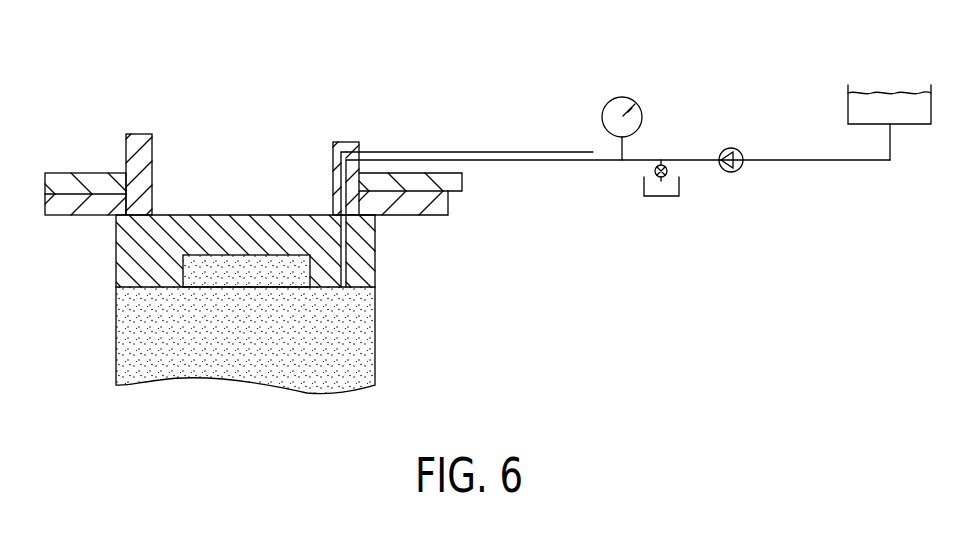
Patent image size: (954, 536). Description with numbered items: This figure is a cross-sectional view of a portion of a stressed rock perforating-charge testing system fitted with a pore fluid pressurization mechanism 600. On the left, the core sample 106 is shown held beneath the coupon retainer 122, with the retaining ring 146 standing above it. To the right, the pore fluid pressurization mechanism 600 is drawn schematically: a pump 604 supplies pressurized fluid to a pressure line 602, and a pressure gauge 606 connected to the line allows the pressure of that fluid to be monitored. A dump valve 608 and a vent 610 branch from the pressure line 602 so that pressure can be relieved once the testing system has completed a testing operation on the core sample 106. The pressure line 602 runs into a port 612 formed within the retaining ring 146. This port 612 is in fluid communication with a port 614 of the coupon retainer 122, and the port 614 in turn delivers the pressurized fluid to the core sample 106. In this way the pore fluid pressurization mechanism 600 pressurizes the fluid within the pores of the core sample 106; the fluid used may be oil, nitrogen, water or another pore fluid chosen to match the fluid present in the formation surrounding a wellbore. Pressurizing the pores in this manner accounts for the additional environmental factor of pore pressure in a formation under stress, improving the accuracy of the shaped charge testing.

The retaining ring 146 is at (348, 143).
The coupon retainer 122 is at (368, 270).
The port 614 is at (349, 232).
The port 612 is at (337, 170).
The pressure line 602 is at (426, 150).
The pore fluid pressurization mechanism 600 is at (533, 95).
The pressure gauge 606 is at (644, 116).
The dump valve 608 is at (652, 172).
The vent 610 is at (681, 191).
The pump 604 is at (737, 148).
The core sample 106 is at (362, 346).